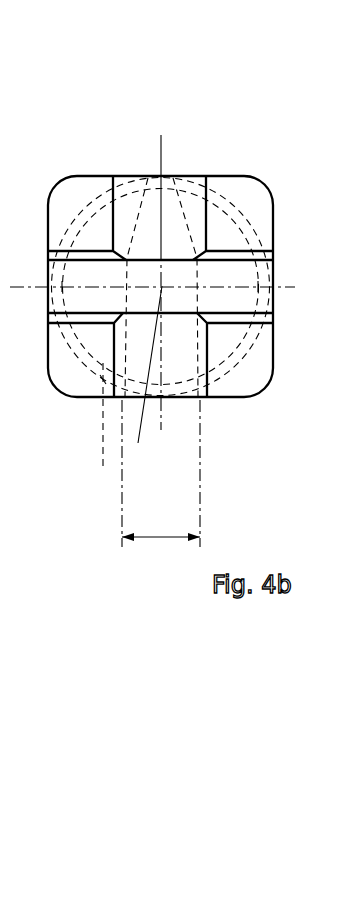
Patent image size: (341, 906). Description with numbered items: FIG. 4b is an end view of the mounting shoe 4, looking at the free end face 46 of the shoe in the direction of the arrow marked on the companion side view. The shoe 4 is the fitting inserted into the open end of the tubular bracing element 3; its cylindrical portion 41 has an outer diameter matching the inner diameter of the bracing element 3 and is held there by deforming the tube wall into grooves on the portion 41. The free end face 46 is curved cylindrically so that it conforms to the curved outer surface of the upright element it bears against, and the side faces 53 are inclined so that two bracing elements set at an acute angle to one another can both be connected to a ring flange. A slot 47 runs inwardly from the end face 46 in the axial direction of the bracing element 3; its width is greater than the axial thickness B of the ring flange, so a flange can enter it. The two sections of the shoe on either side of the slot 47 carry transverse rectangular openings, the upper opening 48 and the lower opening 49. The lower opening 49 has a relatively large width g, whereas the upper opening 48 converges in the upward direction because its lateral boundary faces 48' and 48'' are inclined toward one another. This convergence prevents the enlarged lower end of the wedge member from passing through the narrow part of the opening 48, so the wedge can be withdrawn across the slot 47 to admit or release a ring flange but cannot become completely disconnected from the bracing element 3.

The mounting shoe 4 is at (147, 213).
The cylindrical portion 41 is at (58, 396).
The free end face 46 is at (167, 198).
The slot 47 is at (85, 298).
The upper opening 48 is at (161, 217).
The lateral boundary face 48' is at (76, 175).
The lateral boundary face 48'' is at (234, 154).
The side faces 53 is at (252, 197).
The bracing element 3 is at (101, 432).
The axial thickness of ring flange B is at (146, 382).
The lower opening 49 is at (207, 419).
The width of lower opening g is at (158, 539).